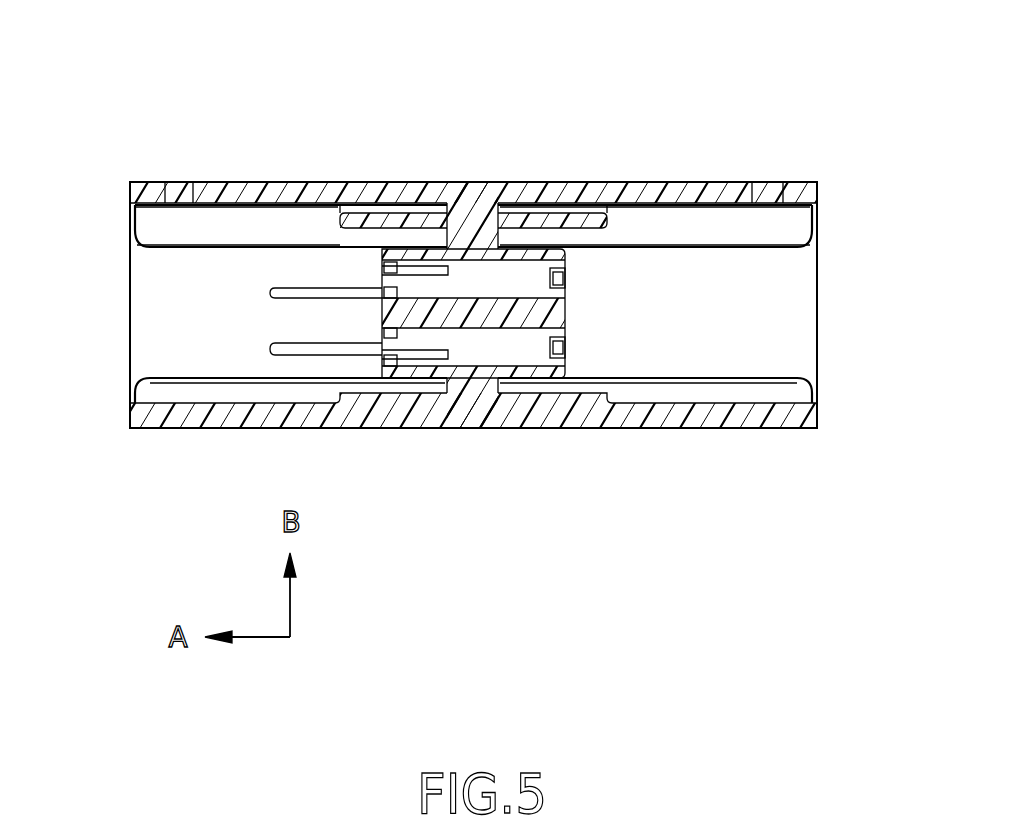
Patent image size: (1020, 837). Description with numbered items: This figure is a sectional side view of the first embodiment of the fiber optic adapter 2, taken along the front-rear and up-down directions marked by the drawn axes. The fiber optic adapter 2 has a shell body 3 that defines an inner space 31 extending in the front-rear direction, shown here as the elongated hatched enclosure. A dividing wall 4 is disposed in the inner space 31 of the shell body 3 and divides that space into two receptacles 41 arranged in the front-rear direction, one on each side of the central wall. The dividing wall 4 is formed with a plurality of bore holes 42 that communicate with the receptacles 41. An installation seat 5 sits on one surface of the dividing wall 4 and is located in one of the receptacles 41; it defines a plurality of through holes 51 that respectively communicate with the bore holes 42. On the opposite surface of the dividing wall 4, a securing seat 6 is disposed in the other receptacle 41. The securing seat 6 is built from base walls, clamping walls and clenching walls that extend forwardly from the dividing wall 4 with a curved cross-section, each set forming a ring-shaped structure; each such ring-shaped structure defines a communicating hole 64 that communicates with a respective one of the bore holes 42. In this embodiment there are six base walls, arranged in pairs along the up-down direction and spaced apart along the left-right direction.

The fiber optic adapter 2 is at (476, 112).
The shell body 3 is at (484, 282).
The inner space 31 is at (693, 375).
The dividing wall 4 is at (484, 309).
The receptacles 41 is at (160, 320).
The bore holes 42 is at (477, 252).
The installation seat 5 is at (484, 305).
The through holes 51 is at (527, 340).
The securing seat 6 is at (346, 310).
The communicating hole 64 is at (417, 337).